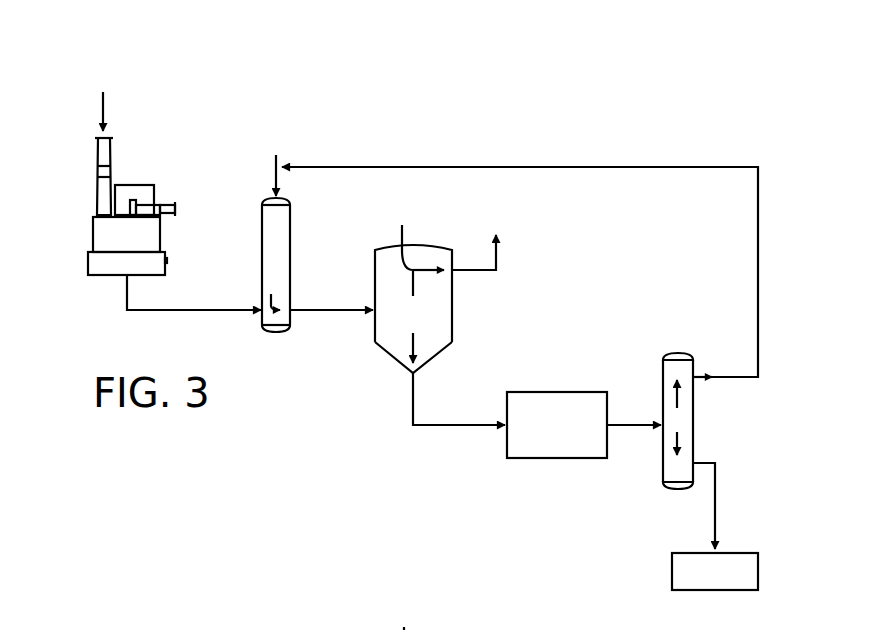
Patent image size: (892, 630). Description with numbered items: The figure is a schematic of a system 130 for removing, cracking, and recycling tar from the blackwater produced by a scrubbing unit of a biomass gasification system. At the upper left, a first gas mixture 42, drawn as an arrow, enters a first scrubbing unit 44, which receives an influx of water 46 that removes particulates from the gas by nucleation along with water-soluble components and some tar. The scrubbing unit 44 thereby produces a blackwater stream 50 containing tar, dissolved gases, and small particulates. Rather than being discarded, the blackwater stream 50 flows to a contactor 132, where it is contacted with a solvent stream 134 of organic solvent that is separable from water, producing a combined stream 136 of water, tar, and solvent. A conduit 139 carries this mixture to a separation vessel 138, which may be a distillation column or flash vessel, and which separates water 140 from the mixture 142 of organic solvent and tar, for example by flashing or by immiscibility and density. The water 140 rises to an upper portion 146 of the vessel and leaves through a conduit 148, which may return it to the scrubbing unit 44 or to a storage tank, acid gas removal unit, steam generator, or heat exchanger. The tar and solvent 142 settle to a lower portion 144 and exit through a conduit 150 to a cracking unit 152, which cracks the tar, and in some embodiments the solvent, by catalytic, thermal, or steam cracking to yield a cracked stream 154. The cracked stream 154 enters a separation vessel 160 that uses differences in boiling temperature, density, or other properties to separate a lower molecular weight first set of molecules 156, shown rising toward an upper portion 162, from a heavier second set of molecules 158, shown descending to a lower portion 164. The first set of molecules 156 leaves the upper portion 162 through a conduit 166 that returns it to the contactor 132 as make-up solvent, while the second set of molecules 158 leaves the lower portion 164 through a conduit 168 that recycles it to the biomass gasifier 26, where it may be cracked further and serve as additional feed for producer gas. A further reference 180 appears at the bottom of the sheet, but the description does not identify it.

The system 130 is at (568, 42).
The first gas mixture 42 is at (104, 97).
The first scrubbing unit 44 is at (170, 120).
The water 46 is at (90, 233).
The blackwater stream 50 is at (183, 312).
The contactor 132 is at (291, 266).
The solvent stream 134 is at (275, 162).
The combined stream 136 is at (271, 294).
The conduit 139 is at (300, 312).
The upper portion 146 is at (455, 224).
The separation vessel 138 is at (453, 302).
The water 140 is at (415, 248).
The mixture of organic solvent and tar 142 is at (415, 345).
The lower portion 144 is at (378, 360).
The conduit 148 is at (497, 260).
The conduit 150 is at (467, 427).
The cracking unit 152 is at (557, 391).
The cracked stream 154 is at (627, 427).
The separation vessel 160 is at (694, 418).
The upper portion 162 is at (682, 349).
The lower portion 164 is at (673, 500).
The first set of molecules 156 is at (663, 400).
The second set of molecules 158 is at (663, 446).
The conduit 166 is at (522, 166).
The conduit 168 is at (716, 503).
The biomass gasifier 26 is at (715, 591).
The stream 180 is at (406, 616).